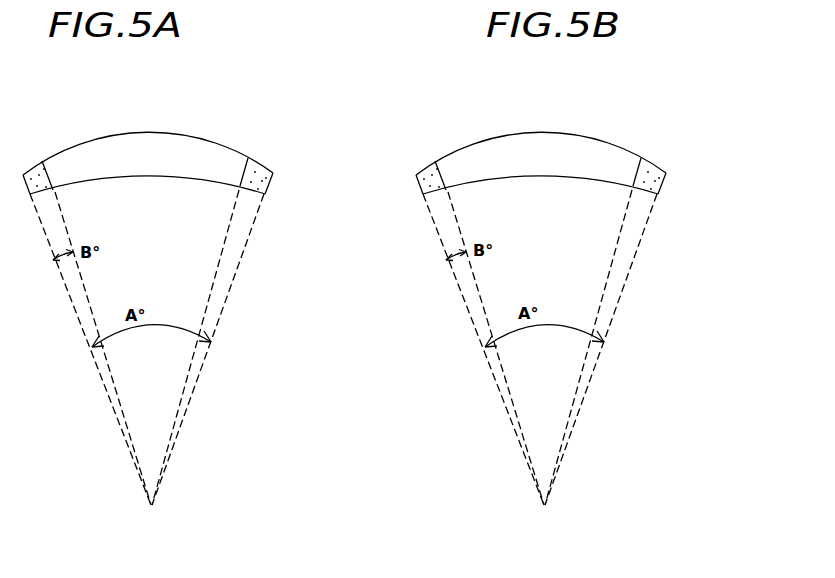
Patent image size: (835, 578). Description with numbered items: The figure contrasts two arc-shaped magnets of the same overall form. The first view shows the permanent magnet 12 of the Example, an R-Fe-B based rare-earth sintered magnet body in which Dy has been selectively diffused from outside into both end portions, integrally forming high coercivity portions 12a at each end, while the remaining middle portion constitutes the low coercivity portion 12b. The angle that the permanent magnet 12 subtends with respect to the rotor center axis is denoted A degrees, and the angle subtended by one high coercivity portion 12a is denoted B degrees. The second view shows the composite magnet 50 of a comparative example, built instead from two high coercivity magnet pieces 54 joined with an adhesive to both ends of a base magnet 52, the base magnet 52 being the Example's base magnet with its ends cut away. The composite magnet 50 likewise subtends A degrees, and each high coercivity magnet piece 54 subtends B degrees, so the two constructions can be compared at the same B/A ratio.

In FIG. 5A, the permanent magnet 12 is at (96, 106).
In FIG. 5A, the high coercivity portion 12a is at (36, 163).
In FIG. 5A, the low coercivity portion 12b is at (180, 140).
In FIG. 5B, the composite magnet 50 is at (530, 122).
In FIG. 5B, the base magnet 52 is at (541, 137).
In FIG. 5B, the high coercivity magnet piece 54 is at (530, 147).